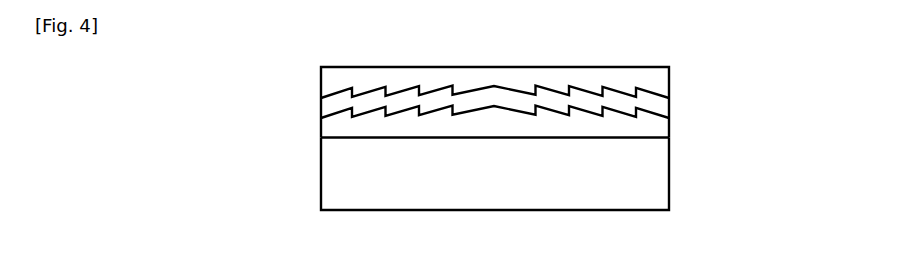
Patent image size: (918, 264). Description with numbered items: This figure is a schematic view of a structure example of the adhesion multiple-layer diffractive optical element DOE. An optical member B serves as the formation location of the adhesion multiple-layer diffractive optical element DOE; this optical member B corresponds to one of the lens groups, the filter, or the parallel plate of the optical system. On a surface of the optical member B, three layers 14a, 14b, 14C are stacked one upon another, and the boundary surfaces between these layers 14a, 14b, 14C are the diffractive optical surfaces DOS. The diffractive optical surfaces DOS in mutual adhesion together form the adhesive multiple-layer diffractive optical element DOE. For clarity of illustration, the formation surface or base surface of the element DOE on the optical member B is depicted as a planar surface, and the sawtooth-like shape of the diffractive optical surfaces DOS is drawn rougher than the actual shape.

The layer 14C is at (672, 71).
The layer 14b is at (671, 105).
The layer 14a is at (671, 130).
The optical member B is at (671, 168).
The adhesion multiple-layer diffractive optical element DOE is at (456, 128).
The diffractive optical surfaces DOS is at (518, 108).